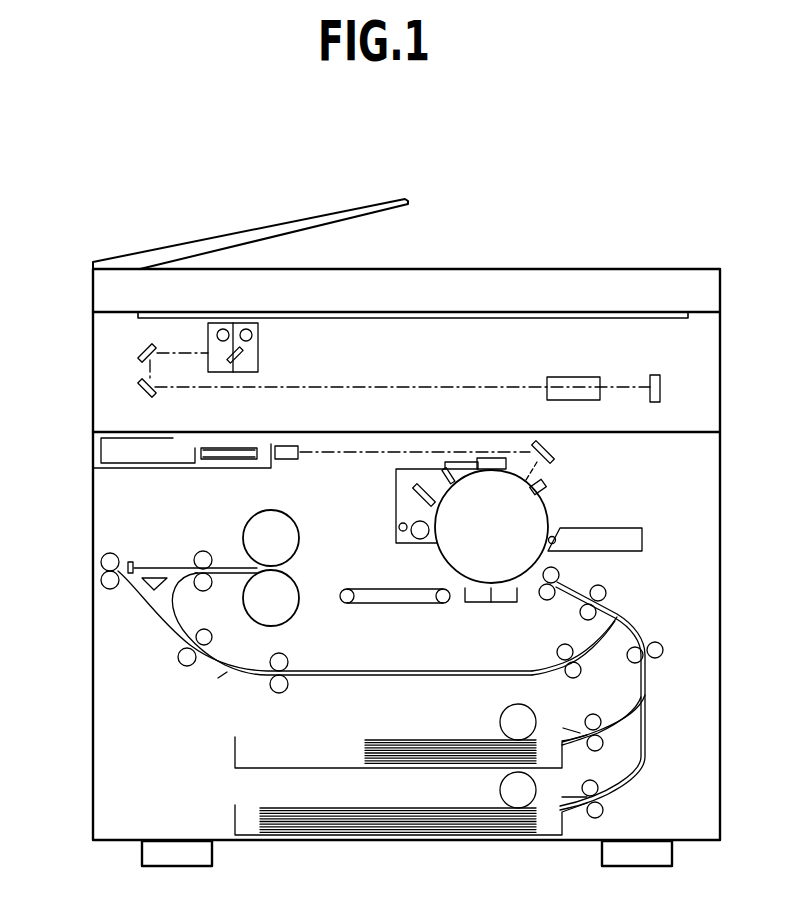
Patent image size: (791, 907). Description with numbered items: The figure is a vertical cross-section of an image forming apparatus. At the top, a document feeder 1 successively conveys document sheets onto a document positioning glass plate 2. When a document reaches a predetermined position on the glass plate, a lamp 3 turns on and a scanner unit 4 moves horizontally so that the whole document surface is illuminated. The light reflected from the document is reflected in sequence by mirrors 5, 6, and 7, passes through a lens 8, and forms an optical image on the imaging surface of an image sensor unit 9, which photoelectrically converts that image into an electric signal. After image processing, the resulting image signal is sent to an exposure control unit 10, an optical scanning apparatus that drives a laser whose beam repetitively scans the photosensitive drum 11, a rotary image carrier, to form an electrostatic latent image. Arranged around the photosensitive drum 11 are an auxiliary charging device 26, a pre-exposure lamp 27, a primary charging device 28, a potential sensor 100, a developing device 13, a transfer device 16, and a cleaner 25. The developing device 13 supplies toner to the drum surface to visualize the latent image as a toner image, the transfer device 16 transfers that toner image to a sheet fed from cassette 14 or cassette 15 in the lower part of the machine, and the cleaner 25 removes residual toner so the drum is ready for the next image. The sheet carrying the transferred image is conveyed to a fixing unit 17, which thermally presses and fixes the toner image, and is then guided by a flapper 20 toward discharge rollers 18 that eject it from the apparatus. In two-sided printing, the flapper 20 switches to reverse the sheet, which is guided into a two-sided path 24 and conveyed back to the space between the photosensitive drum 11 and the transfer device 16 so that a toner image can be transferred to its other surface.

The document feeder 1 is at (187, 246).
The document positioning glass plate 2 is at (627, 310).
The lamp 3 is at (258, 330).
The scanner unit 4 is at (258, 345).
The mirror 5 is at (248, 357).
The mirror 6 is at (143, 350).
The mirror 7 is at (142, 392).
The lens 8 is at (573, 377).
The image sensor unit 9 is at (661, 387).
The exposure control unit 10 is at (185, 445).
The photosensitive drum 11 is at (549, 514).
The developing device 13 is at (643, 538).
The cassette 14 is at (233, 753).
The cassette 15 is at (233, 822).
The transfer device 16 is at (478, 603).
The fixing unit 17 is at (300, 541).
The discharge rollers 18 is at (101, 563).
The flapper 20 is at (143, 589).
The two-sided path 24 is at (345, 680).
The cleaner 25 is at (396, 481).
The auxiliary charging device 26 is at (443, 469).
The pre-exposure lamp 27 is at (453, 462).
The primary charging device 28 is at (490, 458).
The potential sensor 100 is at (546, 484).